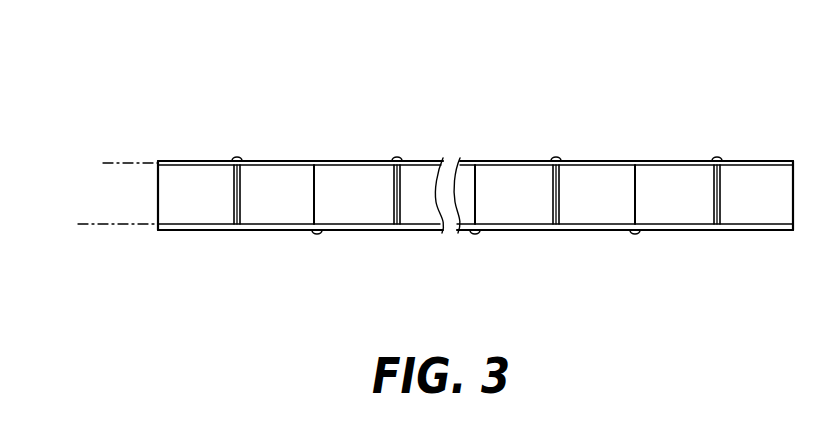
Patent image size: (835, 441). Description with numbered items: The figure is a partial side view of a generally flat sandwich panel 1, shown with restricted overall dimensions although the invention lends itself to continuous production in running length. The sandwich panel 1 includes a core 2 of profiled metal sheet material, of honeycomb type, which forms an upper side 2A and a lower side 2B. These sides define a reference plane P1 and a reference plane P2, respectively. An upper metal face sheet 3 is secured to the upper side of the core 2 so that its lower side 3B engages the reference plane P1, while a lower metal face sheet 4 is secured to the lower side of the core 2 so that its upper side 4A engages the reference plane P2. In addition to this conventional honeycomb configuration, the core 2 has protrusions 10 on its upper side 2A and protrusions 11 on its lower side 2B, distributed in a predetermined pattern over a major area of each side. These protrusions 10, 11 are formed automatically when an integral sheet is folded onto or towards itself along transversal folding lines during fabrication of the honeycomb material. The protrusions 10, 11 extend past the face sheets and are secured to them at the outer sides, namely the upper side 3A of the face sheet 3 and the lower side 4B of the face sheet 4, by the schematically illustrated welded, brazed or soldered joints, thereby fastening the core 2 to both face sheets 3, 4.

The sandwich panel 1 is at (354, 126).
The core 2 is at (158, 182).
The upper side of core 2A is at (493, 162).
The lower side of core 2B is at (187, 227).
The upper metal face sheet 3 is at (678, 162).
The upper side of face sheet 3A is at (310, 162).
The lower side of face sheet 3B is at (748, 165).
The lower metal face sheet 4 is at (360, 230).
The upper side of face sheet 4A is at (598, 218).
The lower side of face sheet 4B is at (263, 230).
The protrusions 10 is at (232, 158).
The protrusions 11 is at (637, 233).
The reference plane P1 is at (130, 163).
The reference plane P2 is at (130, 224).